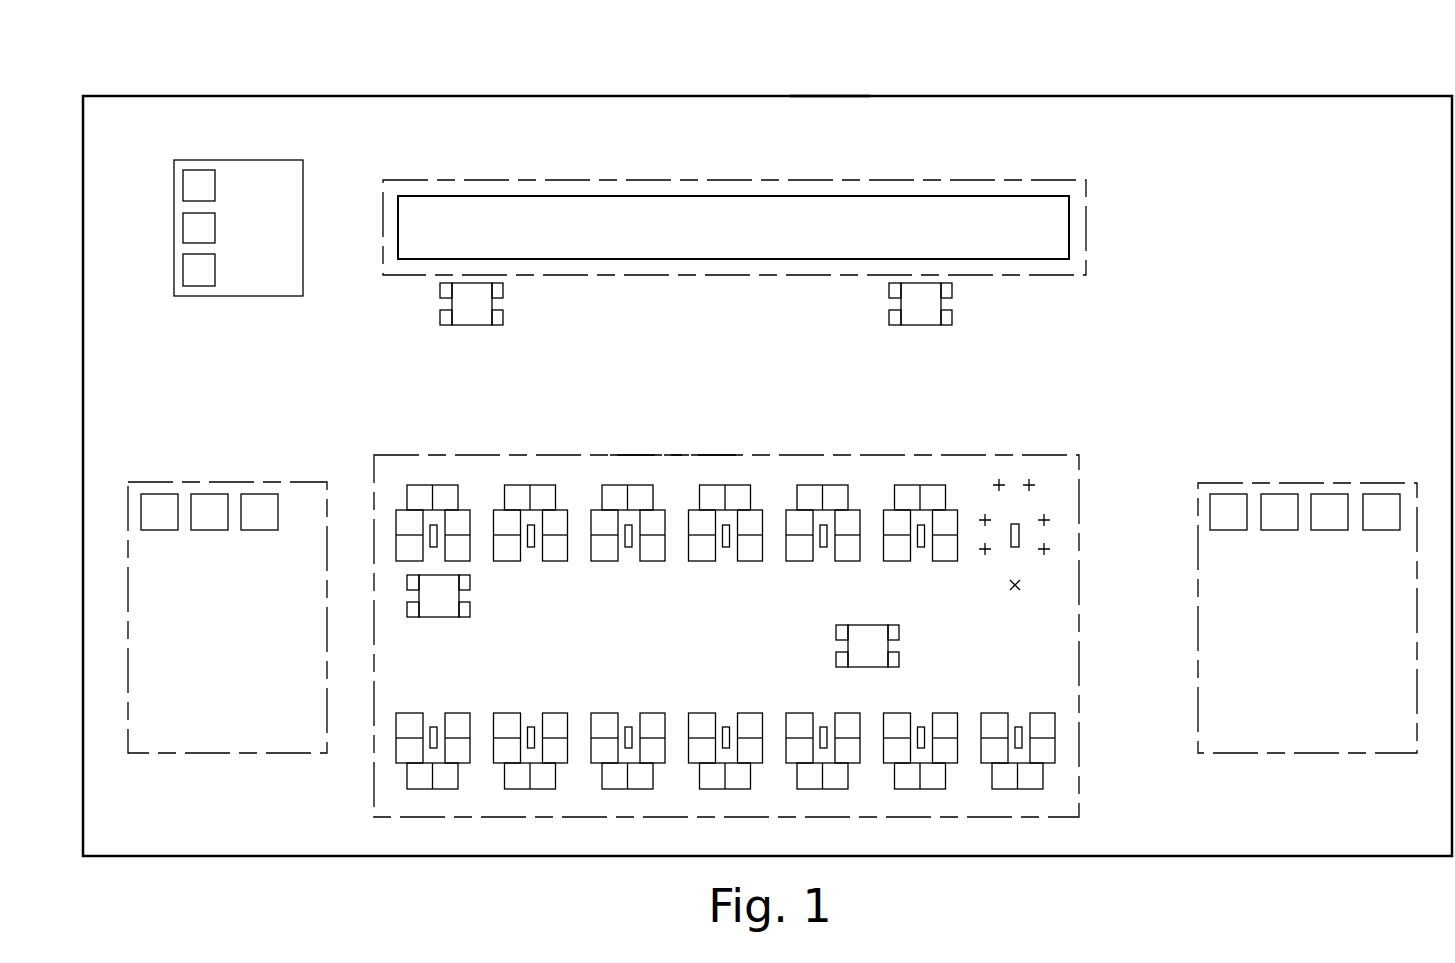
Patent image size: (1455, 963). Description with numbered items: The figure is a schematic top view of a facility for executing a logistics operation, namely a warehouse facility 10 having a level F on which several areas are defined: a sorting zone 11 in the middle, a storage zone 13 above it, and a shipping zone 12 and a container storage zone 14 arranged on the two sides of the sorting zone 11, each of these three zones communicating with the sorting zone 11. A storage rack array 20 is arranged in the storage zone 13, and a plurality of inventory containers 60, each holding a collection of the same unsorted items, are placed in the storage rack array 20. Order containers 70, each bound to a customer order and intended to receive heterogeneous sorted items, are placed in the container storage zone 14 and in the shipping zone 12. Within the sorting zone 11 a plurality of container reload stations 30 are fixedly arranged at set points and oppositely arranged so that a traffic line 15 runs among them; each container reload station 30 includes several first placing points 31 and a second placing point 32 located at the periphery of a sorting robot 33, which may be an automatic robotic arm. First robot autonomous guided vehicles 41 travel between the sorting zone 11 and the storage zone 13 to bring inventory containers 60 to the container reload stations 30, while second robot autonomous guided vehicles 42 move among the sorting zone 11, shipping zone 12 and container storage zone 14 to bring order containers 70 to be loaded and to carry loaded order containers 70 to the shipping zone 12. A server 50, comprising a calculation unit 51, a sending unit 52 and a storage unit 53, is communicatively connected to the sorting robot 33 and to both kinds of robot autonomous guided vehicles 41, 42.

The warehouse facility 10 is at (1343, 92).
The level F is at (827, 106).
The sorting zone 11 is at (672, 473).
The shipping zone 12 is at (1384, 740).
The storage zone 13 is at (1043, 187).
The container storage zone 14 is at (292, 740).
The traffic line 15 is at (1032, 670).
The storage rack array 20 is at (1052, 233).
The container reload station 30 is at (405, 478).
The first placing point 31 is at (1044, 549).
The second placing point 32 is at (1018, 585).
The sorting robot 33 is at (1018, 525).
The first robot autonomous guided vehicle 41 is at (471, 320).
The second robot autonomous guided vehicle 42 is at (442, 605).
The server 50 is at (292, 165).
The calculation unit 51 is at (190, 186).
The sending unit 52 is at (190, 232).
The storage unit 53 is at (190, 275).
The inventory container 60 is at (803, 488).
The order container 70 is at (158, 500).